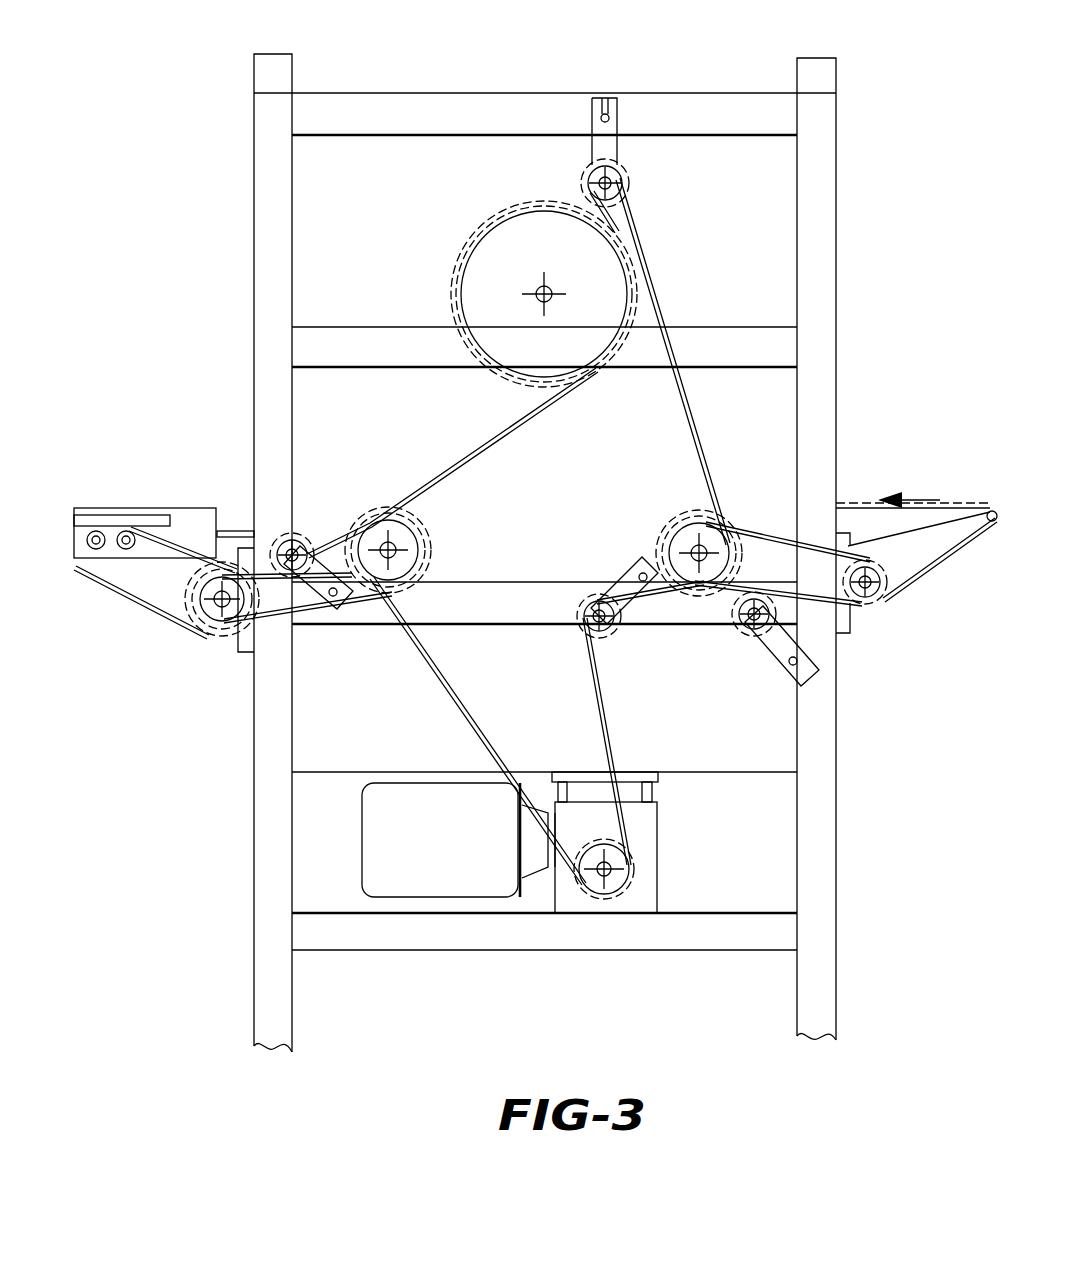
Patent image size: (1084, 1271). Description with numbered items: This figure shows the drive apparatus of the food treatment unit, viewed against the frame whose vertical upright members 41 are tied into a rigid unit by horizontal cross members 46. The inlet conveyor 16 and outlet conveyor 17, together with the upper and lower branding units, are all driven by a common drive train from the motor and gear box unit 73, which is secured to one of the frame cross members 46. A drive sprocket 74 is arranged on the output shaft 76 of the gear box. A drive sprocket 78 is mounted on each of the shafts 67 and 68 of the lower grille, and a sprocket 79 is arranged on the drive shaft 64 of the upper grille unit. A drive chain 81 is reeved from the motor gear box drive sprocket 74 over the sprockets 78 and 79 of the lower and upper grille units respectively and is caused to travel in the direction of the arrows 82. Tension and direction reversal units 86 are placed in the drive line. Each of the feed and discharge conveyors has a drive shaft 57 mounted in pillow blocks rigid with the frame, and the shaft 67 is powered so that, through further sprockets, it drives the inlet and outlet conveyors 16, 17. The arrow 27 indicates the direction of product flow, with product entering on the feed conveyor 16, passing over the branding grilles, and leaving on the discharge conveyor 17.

The upright members 41 is at (255, 222).
The cross members 46 is at (289, 64).
The sprocket 79 is at (526, 206).
The drive shaft 64 is at (548, 290).
The tension and direction reversal units 86 is at (612, 152).
The shaft 68 is at (410, 538).
The shaft 67 is at (703, 540).
The drive sprocket 78 is at (420, 551).
The drive shaft 57 is at (215, 615).
The discharge conveyor 17 is at (241, 516).
The feed conveyor 16 is at (934, 572).
The arrow 27 is at (940, 504).
The arrows 82 is at (714, 407).
The drive chain 81 is at (432, 662).
The motor and gear box unit 73 is at (362, 860).
The drive sprocket 74 is at (610, 885).
The output shaft 76 is at (636, 870).